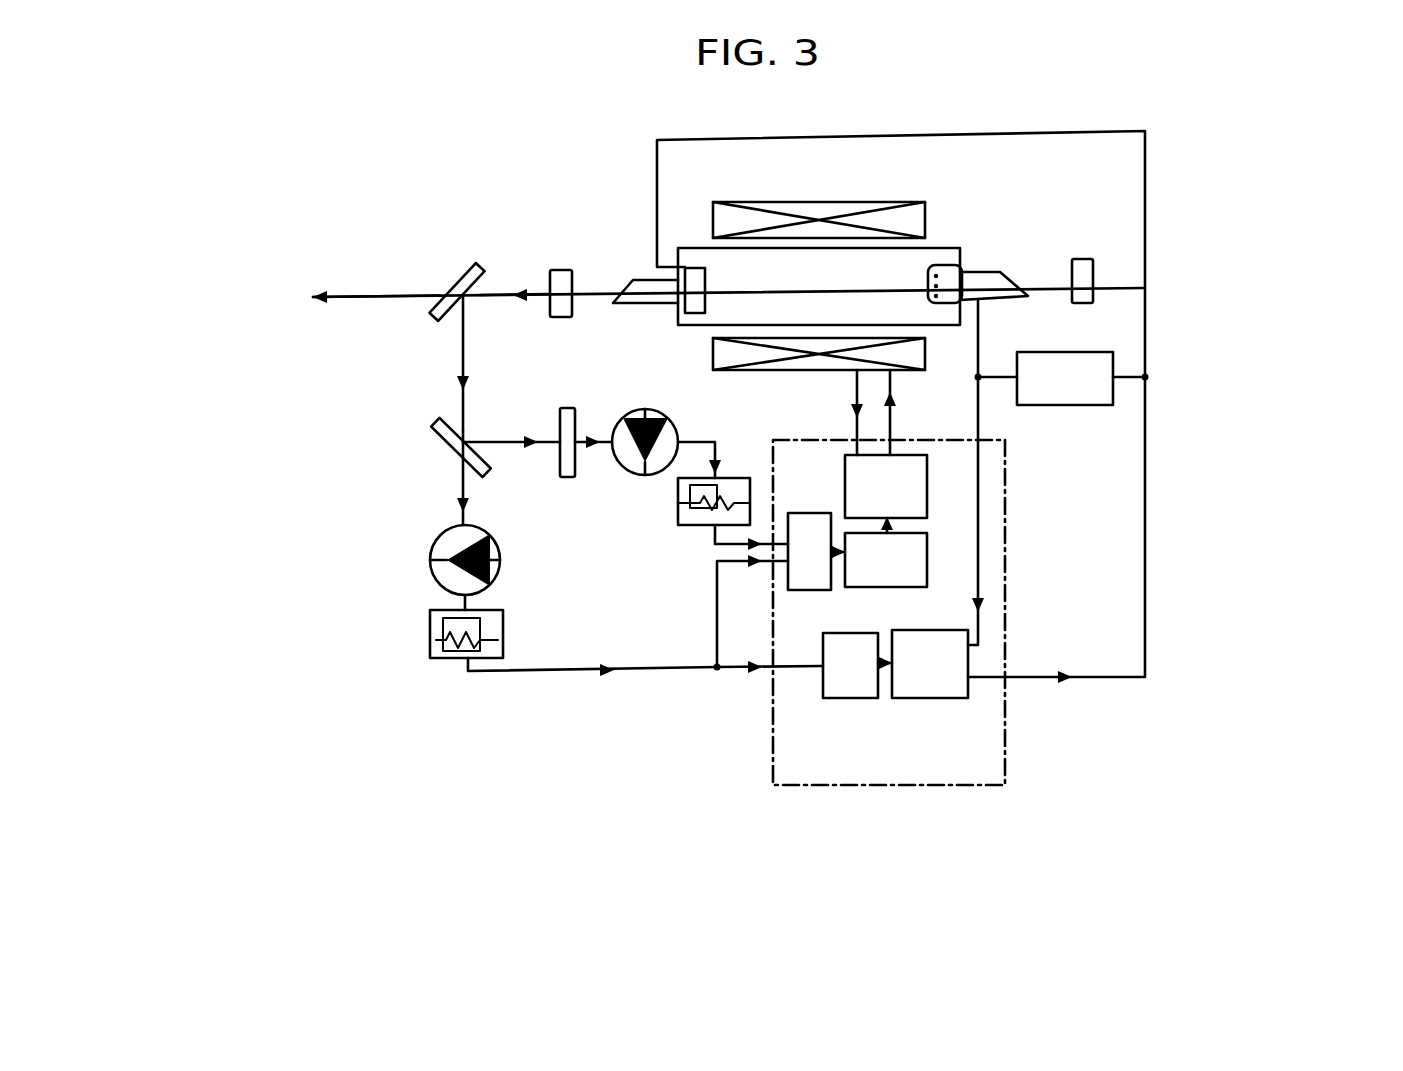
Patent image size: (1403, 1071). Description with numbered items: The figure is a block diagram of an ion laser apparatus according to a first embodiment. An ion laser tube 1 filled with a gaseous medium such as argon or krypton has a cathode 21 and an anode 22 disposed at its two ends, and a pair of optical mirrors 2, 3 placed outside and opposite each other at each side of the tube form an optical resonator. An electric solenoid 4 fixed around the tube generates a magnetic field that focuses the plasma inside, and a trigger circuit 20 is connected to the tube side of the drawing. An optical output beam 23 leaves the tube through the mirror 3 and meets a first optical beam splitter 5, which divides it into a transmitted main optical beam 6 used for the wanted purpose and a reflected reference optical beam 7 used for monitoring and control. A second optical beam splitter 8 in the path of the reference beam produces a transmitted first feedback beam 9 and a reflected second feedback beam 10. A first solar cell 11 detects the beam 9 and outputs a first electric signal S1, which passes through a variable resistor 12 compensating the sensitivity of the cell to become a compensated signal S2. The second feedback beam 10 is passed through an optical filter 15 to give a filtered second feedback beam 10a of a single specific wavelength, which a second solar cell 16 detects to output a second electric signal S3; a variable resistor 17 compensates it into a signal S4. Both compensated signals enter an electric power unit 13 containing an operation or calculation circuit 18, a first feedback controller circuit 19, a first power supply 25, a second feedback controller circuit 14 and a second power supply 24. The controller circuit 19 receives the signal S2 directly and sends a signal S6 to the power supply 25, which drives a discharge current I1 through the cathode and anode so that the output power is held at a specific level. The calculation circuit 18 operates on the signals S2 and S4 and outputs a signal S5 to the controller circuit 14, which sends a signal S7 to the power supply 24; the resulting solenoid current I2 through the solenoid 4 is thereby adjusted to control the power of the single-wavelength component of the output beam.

The ion laser tube 1 is at (948, 248).
The optical mirror 2 is at (1090, 280).
The optical mirror 3 is at (555, 270).
The electric solenoid 4 is at (780, 205).
The first optical beam splitter 5 is at (462, 272).
The main optical beam 6 is at (370, 296).
The reference optical beam 7 is at (460, 355).
The second optical beam splitter 8 is at (440, 440).
The first feedback beam 9 is at (463, 485).
The second feedback beam 10 is at (517, 442).
The filtered second feedback beam 10a is at (597, 450).
The first solar cell 11 is at (430, 563).
The variable resistor 12 is at (447, 658).
The electric power unit 13 is at (880, 785).
The second feedback controller circuit 14 is at (918, 565).
The optical filter 15 is at (567, 408).
The second solar cell 16 is at (677, 422).
The variable resistor 17 is at (678, 503).
The operation or calculation circuit 18 is at (807, 577).
The first feedback controller circuit 19 is at (847, 698).
The trigger circuit 20 is at (1113, 393).
The cathode 21 is at (947, 258).
The anode 22 is at (697, 275).
The optical output beam 23 is at (497, 292).
The second power supply 24 is at (918, 490).
The first power supply 25 is at (937, 697).
The first electric signal S1 is at (480, 598).
The first compensated electric signal S2 is at (560, 672).
The second electric signal S3 is at (718, 467).
The second compensated electric signal S4 is at (713, 535).
The electric signal S5 is at (842, 548).
The electric signal S6 is at (885, 663).
The electric signal S7 is at (887, 525).
The discharge current I1 is at (1019, 489).
The solenoid current I2 is at (879, 411).